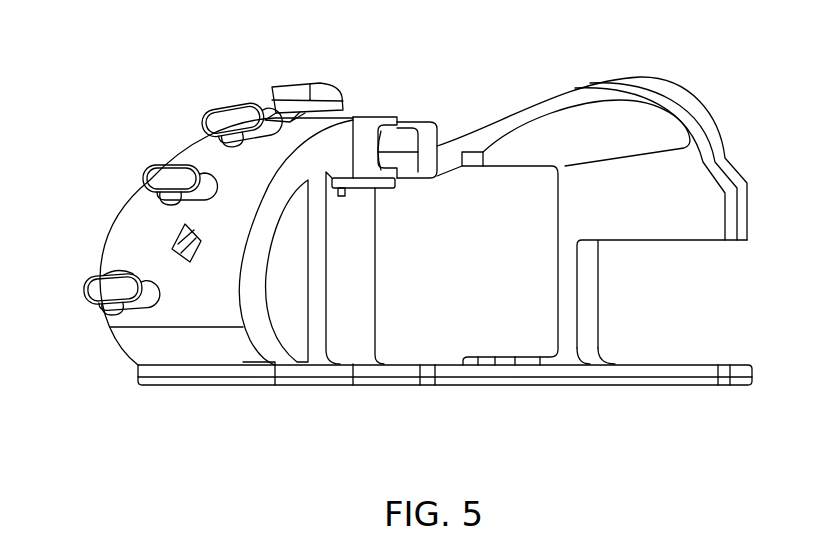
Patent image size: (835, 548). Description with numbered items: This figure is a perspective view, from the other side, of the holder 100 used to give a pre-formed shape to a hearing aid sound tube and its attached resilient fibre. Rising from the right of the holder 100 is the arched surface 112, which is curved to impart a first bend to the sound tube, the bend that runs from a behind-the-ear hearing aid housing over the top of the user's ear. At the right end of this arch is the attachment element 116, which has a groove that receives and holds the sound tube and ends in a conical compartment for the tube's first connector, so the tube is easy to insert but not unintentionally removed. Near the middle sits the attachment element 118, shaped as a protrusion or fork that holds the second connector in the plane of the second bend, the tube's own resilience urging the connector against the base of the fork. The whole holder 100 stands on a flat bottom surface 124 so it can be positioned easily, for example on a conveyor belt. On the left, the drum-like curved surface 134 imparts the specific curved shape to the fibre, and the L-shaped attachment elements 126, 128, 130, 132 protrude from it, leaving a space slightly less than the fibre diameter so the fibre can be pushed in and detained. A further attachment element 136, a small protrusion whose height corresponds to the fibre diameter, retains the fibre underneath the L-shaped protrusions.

The holder 100 is at (444, 386).
The surface 112 is at (622, 78).
The attachment element 116 is at (713, 216).
The attachment element 118 is at (369, 125).
The flat bottom surface 124 is at (570, 388).
The attachment element 126 is at (300, 83).
The attachment element 128 is at (218, 121).
The attachment element 130 is at (151, 177).
The attachment element 132 is at (87, 296).
The curved surface 134 is at (212, 316).
The attachment element 136 is at (188, 254).